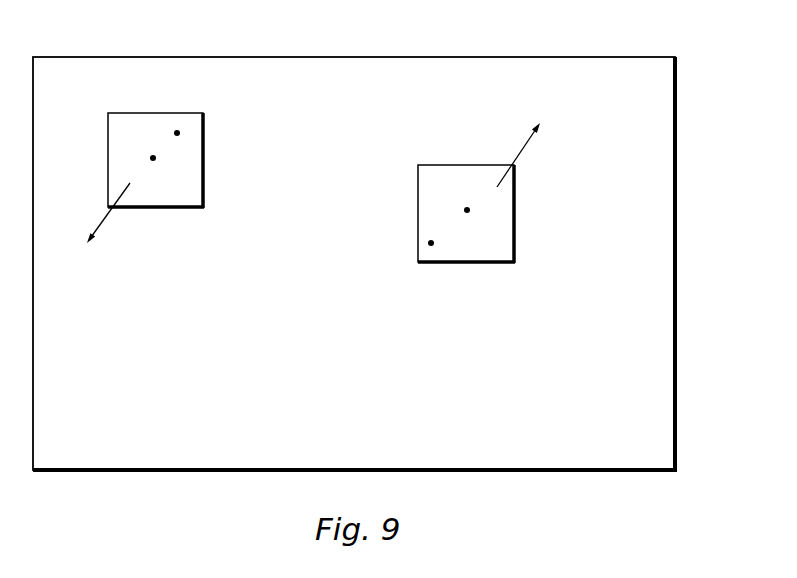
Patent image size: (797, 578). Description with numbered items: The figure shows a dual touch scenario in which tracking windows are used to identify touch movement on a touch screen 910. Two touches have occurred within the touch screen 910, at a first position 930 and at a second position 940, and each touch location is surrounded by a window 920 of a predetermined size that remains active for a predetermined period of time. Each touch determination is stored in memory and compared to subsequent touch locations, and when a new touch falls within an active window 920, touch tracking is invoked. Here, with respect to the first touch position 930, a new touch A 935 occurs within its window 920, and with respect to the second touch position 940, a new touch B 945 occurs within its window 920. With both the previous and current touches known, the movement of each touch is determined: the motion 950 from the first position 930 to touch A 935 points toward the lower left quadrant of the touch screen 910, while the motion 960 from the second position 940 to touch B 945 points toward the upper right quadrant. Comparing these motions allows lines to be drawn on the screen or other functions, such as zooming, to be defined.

The touch screen 910 is at (590, 57).
The window 920 is at (206, 183).
The position 1 930 is at (177, 131).
The touch A 935 is at (153, 158).
The position 2 940 is at (431, 243).
The touch B 945 is at (467, 210).
The motion 950 is at (102, 219).
The motion 960 is at (522, 152).